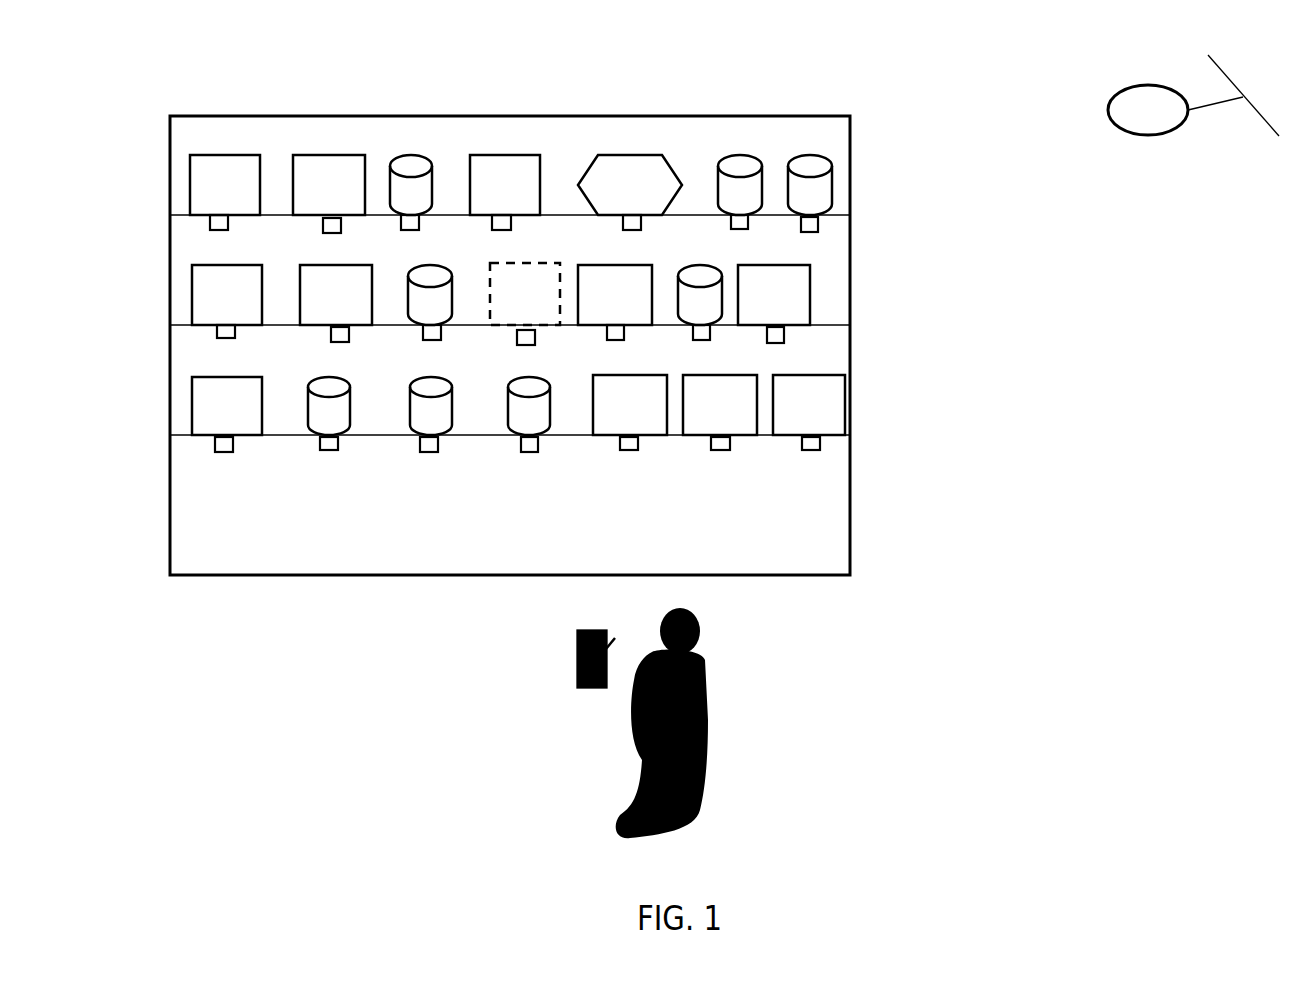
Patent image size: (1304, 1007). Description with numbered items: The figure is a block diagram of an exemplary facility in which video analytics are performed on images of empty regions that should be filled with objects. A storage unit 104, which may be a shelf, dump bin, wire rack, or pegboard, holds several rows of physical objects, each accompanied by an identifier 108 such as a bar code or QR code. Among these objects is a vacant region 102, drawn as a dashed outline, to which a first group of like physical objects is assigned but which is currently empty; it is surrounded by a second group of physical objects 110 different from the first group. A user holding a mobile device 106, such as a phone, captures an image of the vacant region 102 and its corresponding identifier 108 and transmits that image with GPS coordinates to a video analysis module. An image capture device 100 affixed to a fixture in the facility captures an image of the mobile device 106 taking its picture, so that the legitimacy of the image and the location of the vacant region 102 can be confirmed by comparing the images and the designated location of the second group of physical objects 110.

The image capture device 100 is at (1148, 135).
The vacant region 102 is at (730, 292).
The storage unit 104 is at (850, 545).
The mobile device 106 is at (563, 672).
The identifier 108 is at (820, 218).
The second group of physical objects 110 is at (850, 392).